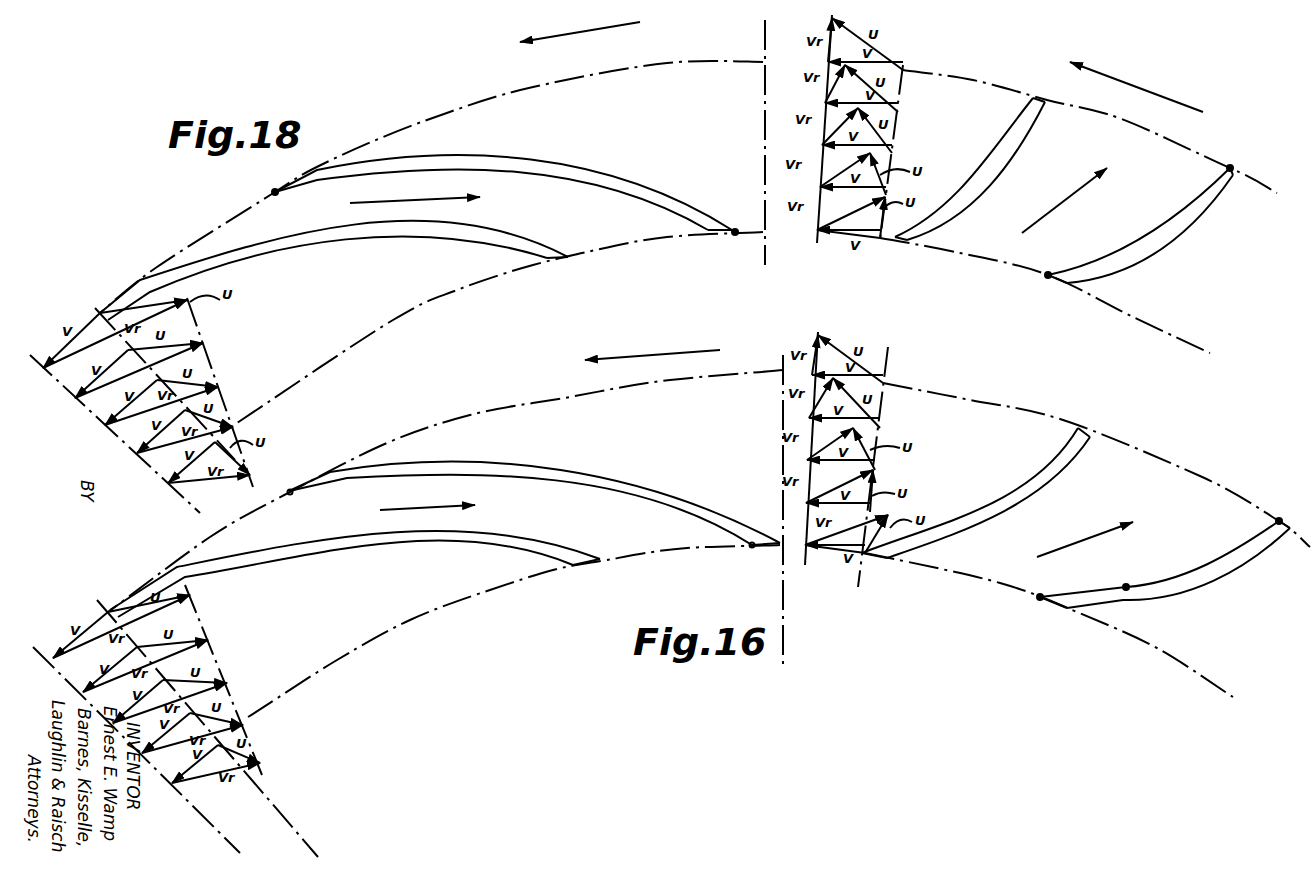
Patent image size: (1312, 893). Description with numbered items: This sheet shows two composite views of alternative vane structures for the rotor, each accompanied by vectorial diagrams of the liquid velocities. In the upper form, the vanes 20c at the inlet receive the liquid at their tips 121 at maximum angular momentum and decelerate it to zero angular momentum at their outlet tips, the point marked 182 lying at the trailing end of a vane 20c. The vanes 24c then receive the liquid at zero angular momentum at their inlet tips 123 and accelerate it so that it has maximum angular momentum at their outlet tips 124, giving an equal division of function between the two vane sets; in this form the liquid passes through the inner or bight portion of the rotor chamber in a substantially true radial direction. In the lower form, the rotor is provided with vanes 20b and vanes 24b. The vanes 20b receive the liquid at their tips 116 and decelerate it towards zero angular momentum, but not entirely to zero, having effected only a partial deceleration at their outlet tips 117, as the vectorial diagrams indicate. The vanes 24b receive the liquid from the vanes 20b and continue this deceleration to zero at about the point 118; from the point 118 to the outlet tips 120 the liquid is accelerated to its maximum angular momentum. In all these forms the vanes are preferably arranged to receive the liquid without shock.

In FIG. 18, the vanes 20c is at (562, 164).
In FIG. 18, the tips 121 is at (275, 192).
In FIG. 18, the blade trailing edge point 182 is at (735, 235).
In FIG. 18, the vanes 24c is at (976, 186).
In FIG. 18, the inlet tips 123 is at (1048, 275).
In FIG. 18, the outlet tips 124 is at (1230, 168).
In FIG. 16, the vanes 20b is at (574, 470).
In FIG. 16, the tips 116 is at (290, 492).
In FIG. 16, the outlet tips 117 is at (752, 545).
In FIG. 16, the vanes 24b is at (997, 508).
In FIG. 16, the point 118 is at (1126, 587).
In FIG. 16, the outlet tips 120 is at (1279, 521).